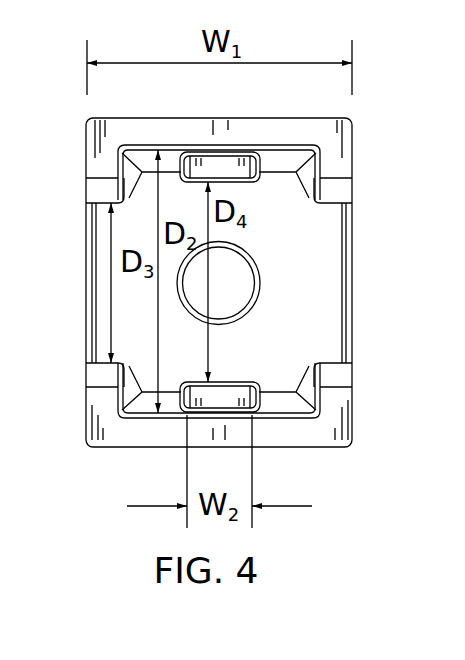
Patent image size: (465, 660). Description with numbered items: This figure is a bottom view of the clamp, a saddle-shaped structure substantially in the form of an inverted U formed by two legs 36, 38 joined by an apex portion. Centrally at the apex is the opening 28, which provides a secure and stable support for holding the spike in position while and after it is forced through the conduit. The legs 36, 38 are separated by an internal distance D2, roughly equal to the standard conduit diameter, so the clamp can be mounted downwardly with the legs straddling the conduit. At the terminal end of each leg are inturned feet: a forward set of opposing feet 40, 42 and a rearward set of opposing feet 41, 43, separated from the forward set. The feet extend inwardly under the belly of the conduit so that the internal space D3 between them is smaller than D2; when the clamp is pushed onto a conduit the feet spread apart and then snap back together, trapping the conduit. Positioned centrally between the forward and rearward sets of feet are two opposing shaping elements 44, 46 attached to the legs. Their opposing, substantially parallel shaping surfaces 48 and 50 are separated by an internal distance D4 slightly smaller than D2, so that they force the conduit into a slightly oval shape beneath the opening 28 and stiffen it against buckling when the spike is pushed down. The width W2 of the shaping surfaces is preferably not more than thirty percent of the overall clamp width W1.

The opening 28 is at (250, 285).
The leg 36 is at (341, 446).
The leg 38 is at (343, 132).
The inturned foot 40 is at (343, 378).
The inturned foot 41 is at (95, 379).
The inturned foot 42 is at (343, 189).
The inturned foot 43 is at (92, 188).
The shaping element 44 is at (187, 410).
The shaping element 46 is at (227, 158).
The shaping surface 48 is at (236, 382).
The shaping surface 50 is at (247, 186).